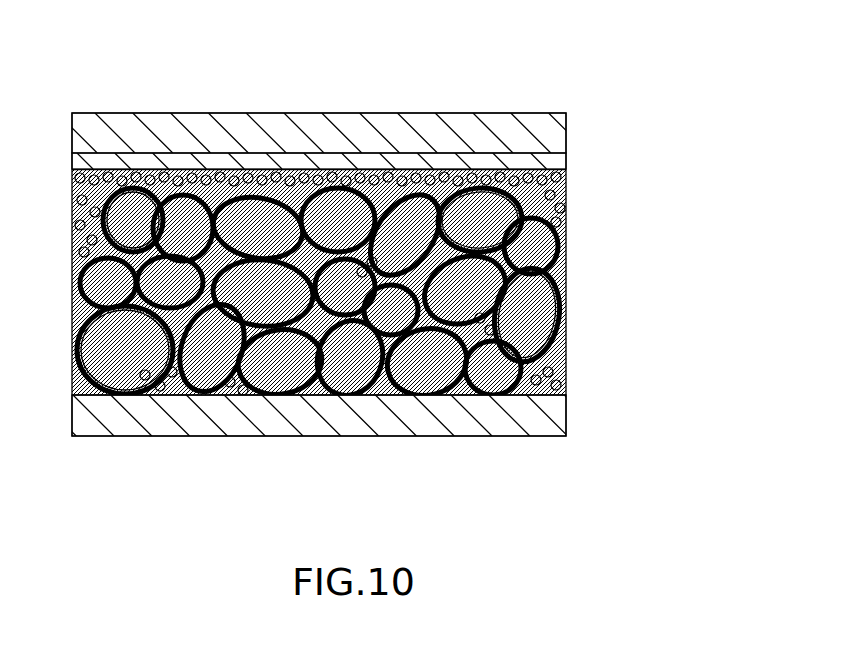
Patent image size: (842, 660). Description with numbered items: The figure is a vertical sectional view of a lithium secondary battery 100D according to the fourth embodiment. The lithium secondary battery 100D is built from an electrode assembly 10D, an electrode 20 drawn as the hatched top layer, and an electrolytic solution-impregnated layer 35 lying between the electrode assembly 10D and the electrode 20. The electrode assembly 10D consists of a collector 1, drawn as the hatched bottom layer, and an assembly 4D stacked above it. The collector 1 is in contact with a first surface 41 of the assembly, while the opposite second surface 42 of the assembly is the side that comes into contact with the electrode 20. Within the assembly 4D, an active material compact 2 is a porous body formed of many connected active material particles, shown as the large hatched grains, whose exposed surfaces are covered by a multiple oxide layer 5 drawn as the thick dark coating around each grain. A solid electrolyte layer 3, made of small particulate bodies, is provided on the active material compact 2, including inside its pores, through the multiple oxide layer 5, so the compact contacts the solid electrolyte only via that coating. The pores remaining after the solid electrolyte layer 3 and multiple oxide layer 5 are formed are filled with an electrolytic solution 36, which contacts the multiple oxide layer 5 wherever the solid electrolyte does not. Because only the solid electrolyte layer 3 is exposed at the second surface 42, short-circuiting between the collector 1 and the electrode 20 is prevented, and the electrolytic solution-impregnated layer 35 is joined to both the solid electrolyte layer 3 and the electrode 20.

The lithium secondary battery 100D is at (489, 82).
The electrode assembly 10D is at (722, 265).
The assembly 4D is at (667, 182).
The electrode 20 is at (556, 132).
The electrolytic solution-impregnated layer 35 is at (556, 160).
The electrolytic solution 36 is at (563, 198).
The solid electrolyte layer 3 is at (563, 212).
The multiple oxide layer 5 is at (563, 308).
The active material compact 2 is at (563, 322).
The collector 1 is at (560, 412).
The first surface 41 is at (392, 397).
The second surface 42 is at (345, 168).